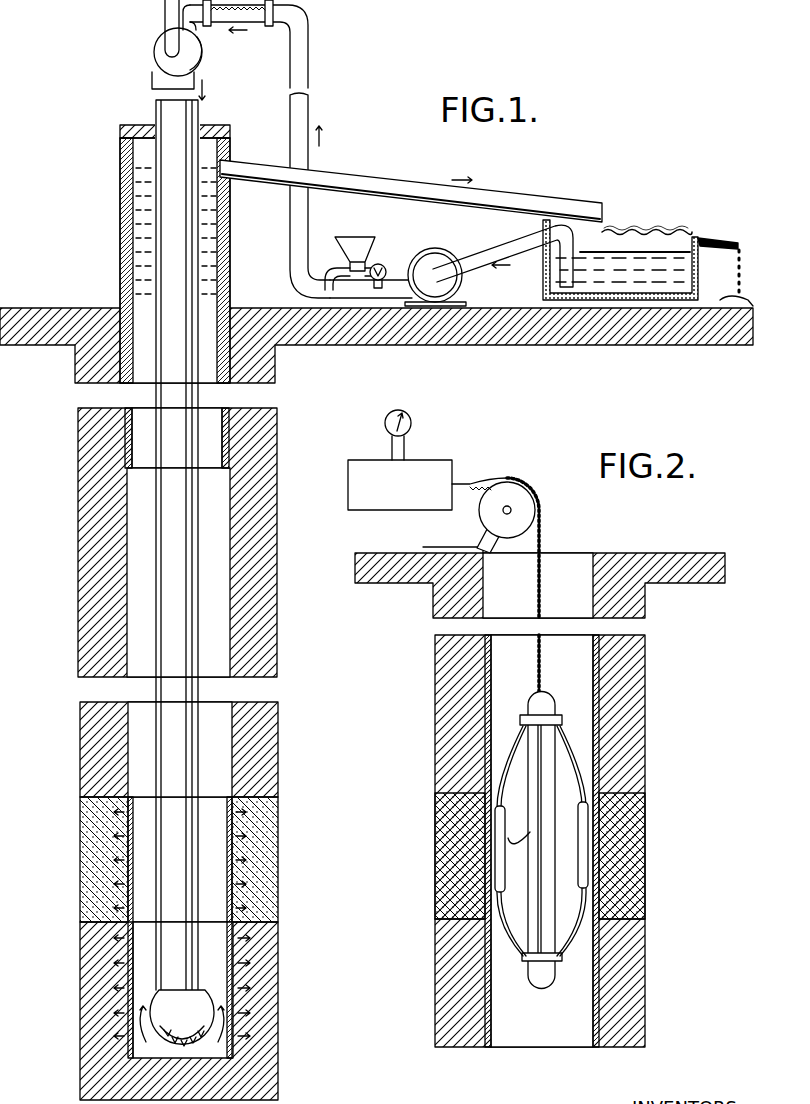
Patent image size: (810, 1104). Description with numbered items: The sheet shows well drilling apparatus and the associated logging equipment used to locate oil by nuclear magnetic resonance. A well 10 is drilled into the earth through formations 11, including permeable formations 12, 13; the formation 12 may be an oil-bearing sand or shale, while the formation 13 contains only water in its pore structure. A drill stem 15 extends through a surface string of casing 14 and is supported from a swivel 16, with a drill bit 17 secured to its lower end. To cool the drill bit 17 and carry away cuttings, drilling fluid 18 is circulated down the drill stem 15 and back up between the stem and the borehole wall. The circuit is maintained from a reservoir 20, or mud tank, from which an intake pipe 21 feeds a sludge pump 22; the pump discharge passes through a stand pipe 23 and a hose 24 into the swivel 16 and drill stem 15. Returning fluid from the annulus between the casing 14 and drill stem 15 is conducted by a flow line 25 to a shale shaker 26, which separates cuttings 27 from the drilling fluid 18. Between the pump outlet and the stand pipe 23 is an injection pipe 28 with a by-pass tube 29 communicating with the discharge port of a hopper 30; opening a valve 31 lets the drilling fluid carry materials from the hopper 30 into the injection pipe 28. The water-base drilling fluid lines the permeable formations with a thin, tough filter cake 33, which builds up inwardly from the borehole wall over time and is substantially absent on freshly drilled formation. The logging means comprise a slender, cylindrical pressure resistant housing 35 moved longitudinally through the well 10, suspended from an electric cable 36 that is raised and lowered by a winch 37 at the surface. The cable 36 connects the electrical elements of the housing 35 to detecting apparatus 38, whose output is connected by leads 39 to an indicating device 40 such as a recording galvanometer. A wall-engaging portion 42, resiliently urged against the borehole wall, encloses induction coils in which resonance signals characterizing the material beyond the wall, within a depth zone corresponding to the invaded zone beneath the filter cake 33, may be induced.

In FIG. 1, the well 10 is at (126, 610).
In FIG. 2, the well 10 is at (596, 558).
In FIG. 1, the formations 11 is at (86, 651).
In FIG. 2, the formations 11 is at (440, 718).
In FIG. 1, the permeable formation 12 is at (88, 855).
In FIG. 2, the permeable formation 12 is at (446, 831).
In FIG. 1, the permeable formation 13 is at (90, 1005).
In FIG. 2, the permeable formation 13 is at (446, 976).
In FIG. 1, the surface string of casing 14 is at (124, 260).
In FIG. 1, the drill stem 15 is at (170, 515).
In FIG. 1, the swivel 16 is at (152, 55).
In FIG. 1, the drill bit 17 is at (191, 1021).
In FIG. 1, the drilling fluid 18 is at (138, 214).
In FIG. 1, the reservoir 20 is at (699, 273).
In FIG. 1, the intake pipe 21 is at (558, 283).
In FIG. 1, the sludge pump 22 is at (432, 250).
In FIG. 1, the stand pipe 23 is at (292, 132).
In FIG. 1, the hose 24 is at (265, 24).
In FIG. 1, the flow line 25 is at (376, 186).
In FIG. 1, the shale shaker 26 is at (678, 229).
In FIG. 1, the cuttings 27 is at (718, 238).
In FIG. 1, the injection pipe 28 is at (357, 300).
In FIG. 1, the by-pass tube 29 is at (335, 272).
In FIG. 1, the hopper 30 is at (362, 240).
In FIG. 1, the valve 31 is at (384, 265).
In FIG. 1, the filter cake 33 is at (134, 800).
In FIG. 2, the pressure resistant housing 35 is at (556, 704).
In FIG. 2, the electric cable 36 is at (514, 478).
In FIG. 2, the winch 37 is at (536, 514).
In FIG. 2, the detecting apparatus 38 is at (348, 490).
In FIG. 2, the leads 39 is at (392, 446).
In FIG. 2, the indicating device 40 is at (411, 425).
In FIG. 2, the wall-engaging portion 42 is at (499, 800).